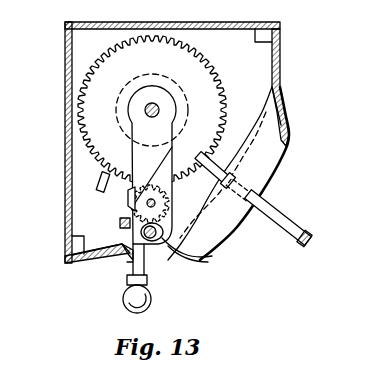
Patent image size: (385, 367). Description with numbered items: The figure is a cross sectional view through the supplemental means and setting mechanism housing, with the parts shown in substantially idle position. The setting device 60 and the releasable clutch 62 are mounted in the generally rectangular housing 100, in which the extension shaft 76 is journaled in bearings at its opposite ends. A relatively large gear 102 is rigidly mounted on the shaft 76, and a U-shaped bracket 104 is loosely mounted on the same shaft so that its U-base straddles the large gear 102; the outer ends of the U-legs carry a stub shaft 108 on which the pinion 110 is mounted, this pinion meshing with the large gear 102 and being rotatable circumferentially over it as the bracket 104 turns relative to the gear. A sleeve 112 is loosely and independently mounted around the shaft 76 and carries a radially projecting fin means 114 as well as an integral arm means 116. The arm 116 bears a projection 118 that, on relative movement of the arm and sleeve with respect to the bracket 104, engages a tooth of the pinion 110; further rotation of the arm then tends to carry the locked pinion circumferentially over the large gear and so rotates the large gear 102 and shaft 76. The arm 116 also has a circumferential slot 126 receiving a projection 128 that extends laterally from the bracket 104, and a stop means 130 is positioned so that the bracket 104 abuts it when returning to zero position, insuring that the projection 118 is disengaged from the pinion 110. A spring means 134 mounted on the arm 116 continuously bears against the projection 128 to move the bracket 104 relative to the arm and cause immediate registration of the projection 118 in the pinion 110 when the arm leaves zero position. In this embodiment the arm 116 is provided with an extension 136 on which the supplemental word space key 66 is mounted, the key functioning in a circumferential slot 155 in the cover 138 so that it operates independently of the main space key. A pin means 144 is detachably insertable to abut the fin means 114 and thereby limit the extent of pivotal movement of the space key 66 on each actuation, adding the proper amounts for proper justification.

The housing 100 is at (66, 152).
The large gear 102 is at (78, 99).
The bracket means 104 is at (121, 252).
The stub shaft 108 is at (165, 183).
The pinion 110 is at (158, 204).
The sleeve 112 is at (115, 116).
The fin means 114 is at (98, 190).
The arm means 116 is at (170, 240).
The projection 118 is at (126, 199).
The circumferential slot 126 is at (131, 259).
The projection 128 is at (166, 236).
The stop means 130 is at (122, 228).
The spring means 134 is at (173, 222).
The extension 136 is at (183, 259).
The cover 138 is at (281, 62).
The pin means 144 is at (280, 205).
The circumferential slot 155 is at (281, 160).
The setting device 60 is at (280, 84).
The releasable clutch 62 is at (120, 222).
The word space key 66 is at (152, 296).
The extension shaft 76 is at (158, 109).